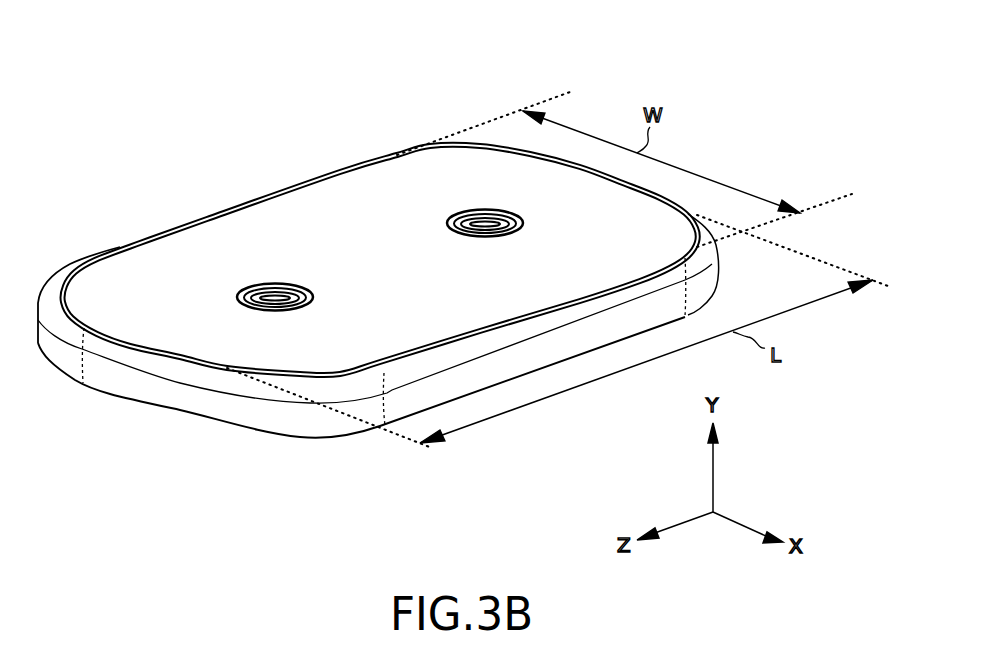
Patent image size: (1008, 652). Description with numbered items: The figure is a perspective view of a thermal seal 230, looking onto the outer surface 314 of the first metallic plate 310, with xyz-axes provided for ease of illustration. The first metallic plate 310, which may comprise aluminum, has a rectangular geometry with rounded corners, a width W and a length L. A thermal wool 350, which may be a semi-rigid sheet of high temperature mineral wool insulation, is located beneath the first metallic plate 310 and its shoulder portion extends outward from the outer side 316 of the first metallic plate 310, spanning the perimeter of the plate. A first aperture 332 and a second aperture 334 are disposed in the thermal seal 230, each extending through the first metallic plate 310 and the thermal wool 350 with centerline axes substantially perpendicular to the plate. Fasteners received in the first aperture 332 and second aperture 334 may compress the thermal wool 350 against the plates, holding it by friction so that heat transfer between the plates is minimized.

The thermal seal 230 is at (378, 245).
The first metallic plate 310 is at (98, 290).
The outer surface 314 is at (337, 100).
The outer side 316 is at (142, 343).
The first aperture 332 is at (272, 275).
The second aperture 334 is at (483, 200).
The thermal wool 350 is at (175, 402).